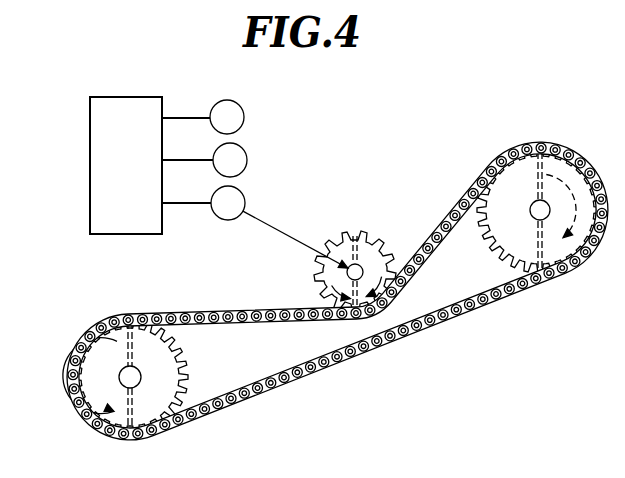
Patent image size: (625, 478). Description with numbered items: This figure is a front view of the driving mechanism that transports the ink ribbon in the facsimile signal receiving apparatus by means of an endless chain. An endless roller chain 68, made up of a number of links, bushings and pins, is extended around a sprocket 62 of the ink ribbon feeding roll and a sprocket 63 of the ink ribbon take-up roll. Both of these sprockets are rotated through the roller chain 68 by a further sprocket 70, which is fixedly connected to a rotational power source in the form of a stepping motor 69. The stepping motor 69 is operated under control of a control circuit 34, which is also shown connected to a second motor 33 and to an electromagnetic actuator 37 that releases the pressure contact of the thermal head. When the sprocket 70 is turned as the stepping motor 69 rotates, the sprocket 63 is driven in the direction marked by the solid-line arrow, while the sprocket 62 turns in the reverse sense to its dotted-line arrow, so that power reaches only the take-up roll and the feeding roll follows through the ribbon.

The motor 33 is at (245, 117).
The electromagnetic actuator 37 is at (247, 160).
The control circuit 34 is at (92, 210).
The stepping motor 69 is at (227, 220).
The sprocket 70 is at (352, 232).
The sprocket 62 is at (543, 247).
The sprocket 63 is at (139, 318).
The endless roller chain 68 is at (392, 333).